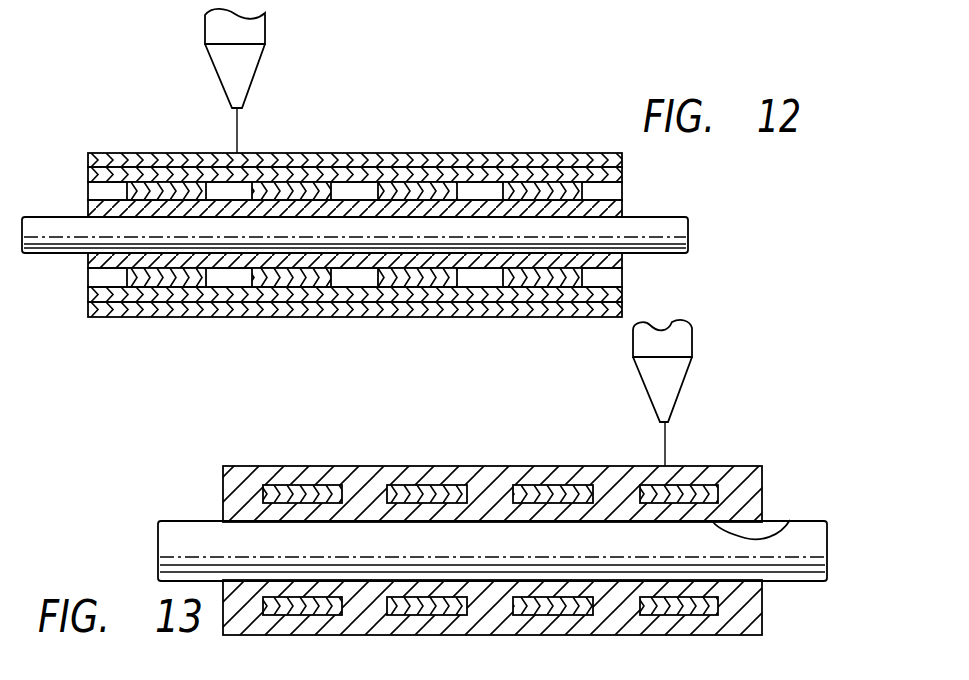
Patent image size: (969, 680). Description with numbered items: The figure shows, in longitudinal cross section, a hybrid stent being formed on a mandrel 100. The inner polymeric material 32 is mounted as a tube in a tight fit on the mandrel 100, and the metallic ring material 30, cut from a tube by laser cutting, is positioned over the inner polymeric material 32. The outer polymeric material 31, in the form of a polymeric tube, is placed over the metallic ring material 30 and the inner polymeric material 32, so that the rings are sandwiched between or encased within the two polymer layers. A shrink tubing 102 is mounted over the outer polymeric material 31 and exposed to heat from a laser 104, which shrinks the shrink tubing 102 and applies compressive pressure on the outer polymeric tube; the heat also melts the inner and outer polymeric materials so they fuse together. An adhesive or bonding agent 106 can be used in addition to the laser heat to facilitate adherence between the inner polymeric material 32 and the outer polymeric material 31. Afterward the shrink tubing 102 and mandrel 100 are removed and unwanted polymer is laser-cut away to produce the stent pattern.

In FIG. 12, the metallic ring material 30 is at (553, 187).
In FIG. 13, the metallic ring material 30 is at (443, 490).
In FIG. 12, the outer polymeric material 31 is at (490, 163).
In FIG. 13, the outer polymeric material 31 is at (308, 466).
In FIG. 12, the inner polymeric material 32 is at (610, 206).
In FIG. 13, the inner polymeric material 32 is at (790, 520).
In FIG. 12, the mandrel 100 is at (66, 217).
In FIG. 13, the mandrel 100 is at (203, 520).
In FIG. 12, the shrink tubing 102 is at (396, 153).
In FIG. 12, the laser 104 is at (212, 63).
In FIG. 13, the laser 104 is at (693, 355).
In FIG. 12, the adhesive or bonding agent 106 is at (127, 272).